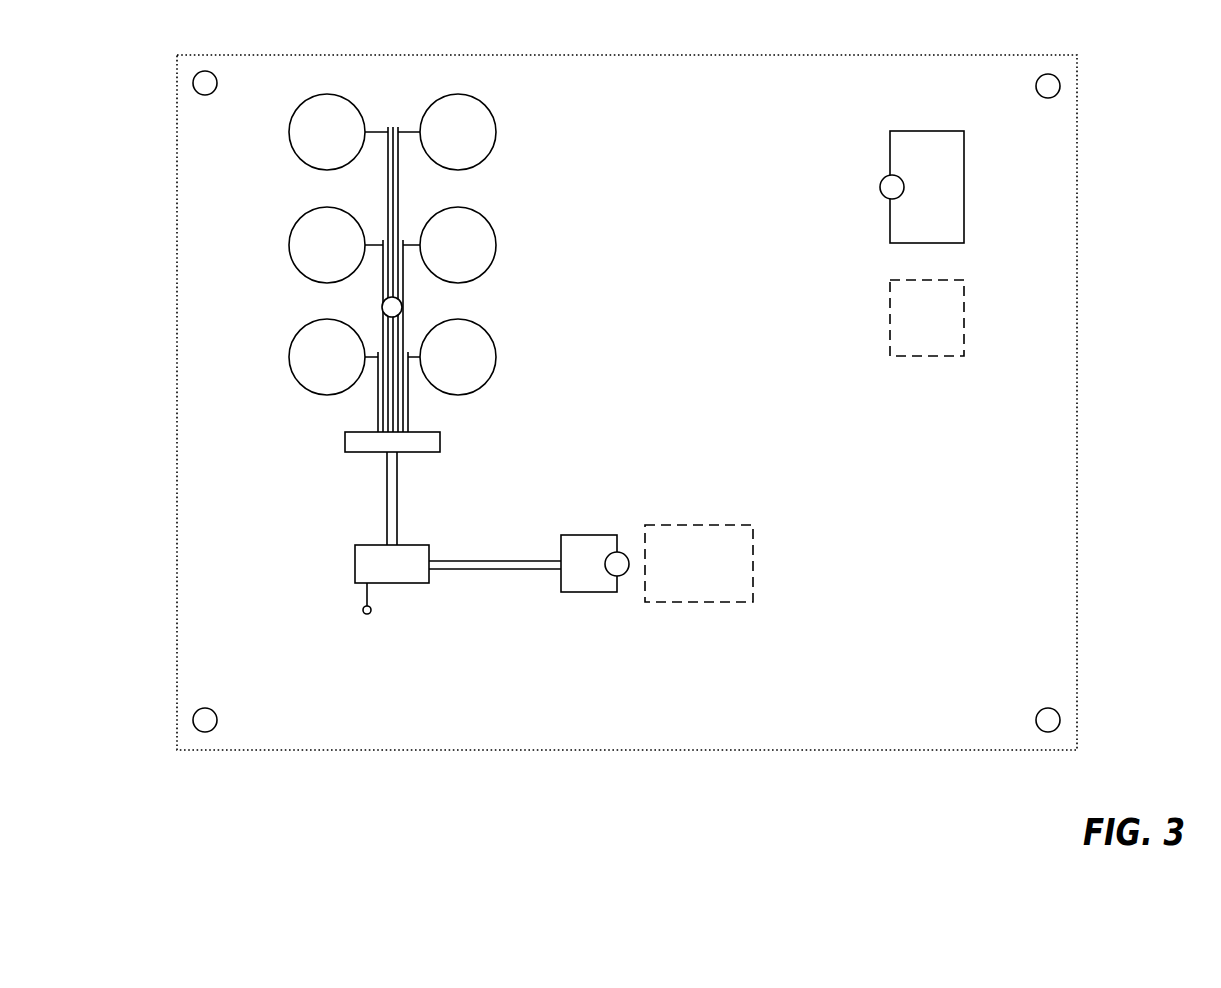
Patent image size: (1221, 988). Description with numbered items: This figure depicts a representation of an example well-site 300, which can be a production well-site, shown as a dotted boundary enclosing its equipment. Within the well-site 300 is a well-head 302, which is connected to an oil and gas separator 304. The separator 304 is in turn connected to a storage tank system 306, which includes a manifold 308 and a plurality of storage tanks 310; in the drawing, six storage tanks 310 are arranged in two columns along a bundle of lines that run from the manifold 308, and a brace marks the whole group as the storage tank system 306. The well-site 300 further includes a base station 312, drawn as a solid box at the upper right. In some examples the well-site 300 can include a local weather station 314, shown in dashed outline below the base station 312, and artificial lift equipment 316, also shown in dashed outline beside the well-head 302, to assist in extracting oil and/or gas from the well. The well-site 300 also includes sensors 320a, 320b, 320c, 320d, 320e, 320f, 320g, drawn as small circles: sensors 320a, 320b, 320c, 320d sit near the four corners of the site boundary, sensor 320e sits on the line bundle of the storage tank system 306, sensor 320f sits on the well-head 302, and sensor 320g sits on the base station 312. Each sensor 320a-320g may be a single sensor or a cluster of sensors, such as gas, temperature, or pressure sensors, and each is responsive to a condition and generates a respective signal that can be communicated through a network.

The well-site 300 is at (1078, 158).
The well-head 302 is at (590, 535).
The oil and gas separator 304 is at (355, 563).
The storage tank system 306 is at (397, 262).
The manifold 308 is at (345, 440).
The storage tanks 310 is at (496, 357).
The base station 312 is at (890, 148).
The local weather station 314 is at (890, 305).
The artificial lift equipment 316 is at (718, 525).
The sensor 320a is at (193, 83).
The sensor 320b is at (193, 720).
The sensor 320c is at (1036, 720).
The sensor 320d is at (1036, 88).
The sensor 320e is at (402, 307).
The sensor 320f is at (607, 575).
The sensor 320g is at (880, 187).